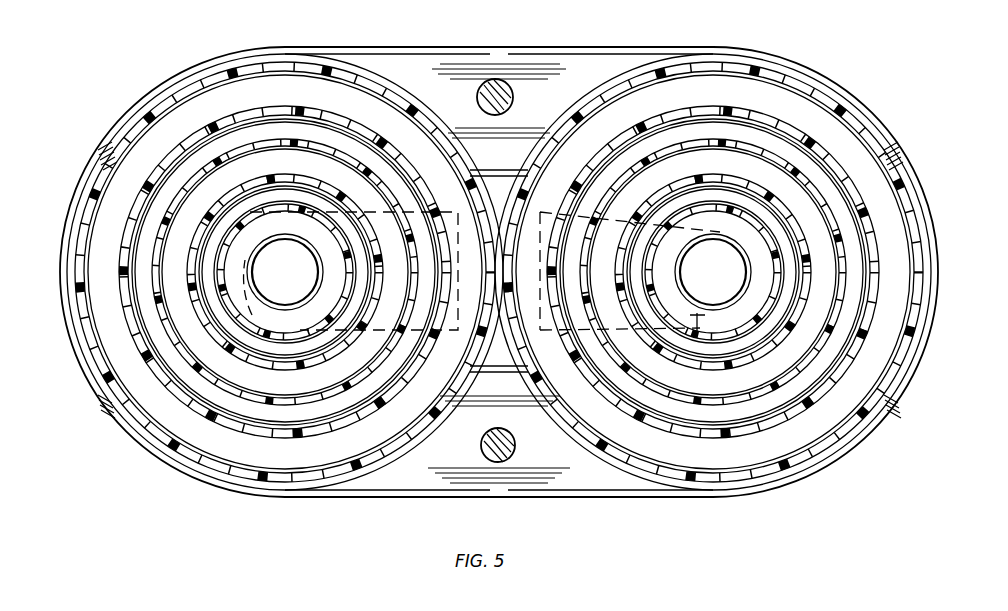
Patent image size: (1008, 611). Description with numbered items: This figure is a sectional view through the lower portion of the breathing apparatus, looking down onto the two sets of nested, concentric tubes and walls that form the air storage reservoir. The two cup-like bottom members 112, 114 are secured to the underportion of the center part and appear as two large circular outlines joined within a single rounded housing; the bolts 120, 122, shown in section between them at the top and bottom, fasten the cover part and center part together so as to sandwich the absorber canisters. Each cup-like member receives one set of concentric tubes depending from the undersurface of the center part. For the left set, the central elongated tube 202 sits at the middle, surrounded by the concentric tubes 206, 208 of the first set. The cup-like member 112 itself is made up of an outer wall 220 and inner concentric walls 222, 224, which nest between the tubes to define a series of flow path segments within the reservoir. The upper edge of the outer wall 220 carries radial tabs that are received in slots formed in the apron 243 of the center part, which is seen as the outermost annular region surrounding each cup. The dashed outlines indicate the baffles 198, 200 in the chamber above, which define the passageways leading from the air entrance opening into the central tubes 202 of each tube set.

The cup-like bottom member 112 is at (232, 62).
The cup-like bottom member 114 is at (765, 66).
The bolt 122 is at (495, 80).
The bolt 120 is at (518, 446).
The apron 243 is at (166, 88).
The outer wall 220 is at (120, 138).
The concentric tube 208 is at (252, 112).
The inner concentric wall 222 is at (254, 148).
The concentric tube 206 is at (258, 182).
The inner concentric wall 224 is at (258, 214).
The central elongated tube 202 is at (253, 282).
The baffle 198 is at (322, 338).
The baffle 200 is at (694, 340).